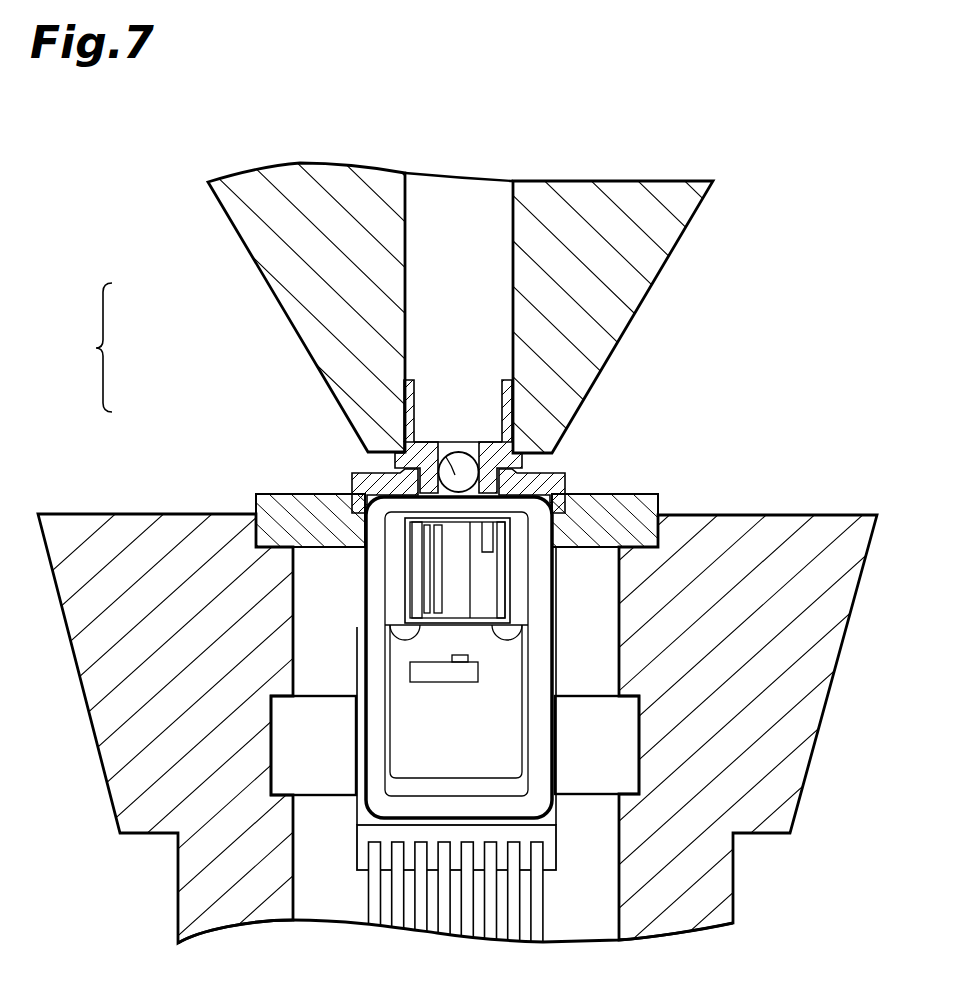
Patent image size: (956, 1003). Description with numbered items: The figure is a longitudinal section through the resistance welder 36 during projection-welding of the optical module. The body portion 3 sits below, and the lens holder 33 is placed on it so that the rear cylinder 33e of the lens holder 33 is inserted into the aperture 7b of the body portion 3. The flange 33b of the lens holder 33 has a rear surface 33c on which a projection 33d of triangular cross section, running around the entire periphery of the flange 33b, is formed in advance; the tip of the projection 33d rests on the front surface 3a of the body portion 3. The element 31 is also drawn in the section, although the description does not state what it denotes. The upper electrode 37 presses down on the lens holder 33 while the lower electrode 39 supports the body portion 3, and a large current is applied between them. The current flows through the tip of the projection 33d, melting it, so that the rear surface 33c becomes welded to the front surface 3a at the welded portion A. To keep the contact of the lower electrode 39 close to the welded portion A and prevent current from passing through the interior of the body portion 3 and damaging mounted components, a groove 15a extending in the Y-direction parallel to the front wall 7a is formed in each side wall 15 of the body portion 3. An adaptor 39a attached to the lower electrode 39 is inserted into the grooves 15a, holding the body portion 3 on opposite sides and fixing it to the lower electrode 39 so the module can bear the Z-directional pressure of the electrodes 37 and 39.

The body portion 3 is at (557, 748).
The front surface 3a is at (482, 466).
The front wall 7a is at (352, 484).
The aperture 7b is at (427, 492).
The side wall 15 is at (356, 658).
The groove 15a is at (357, 630).
The nozzle 31 is at (405, 440).
The lens holder 33 is at (510, 390).
The flange 33b is at (547, 455).
The rear surface 33c is at (540, 476).
The projection 33d is at (567, 488).
The rear cylinder 33e is at (487, 482).
The resistance welder 36 is at (86, 347).
The upper electrode 37 is at (290, 282).
The lower electrode 39 is at (128, 512).
The adaptor 39a is at (293, 503).
The welded portion A is at (402, 468).